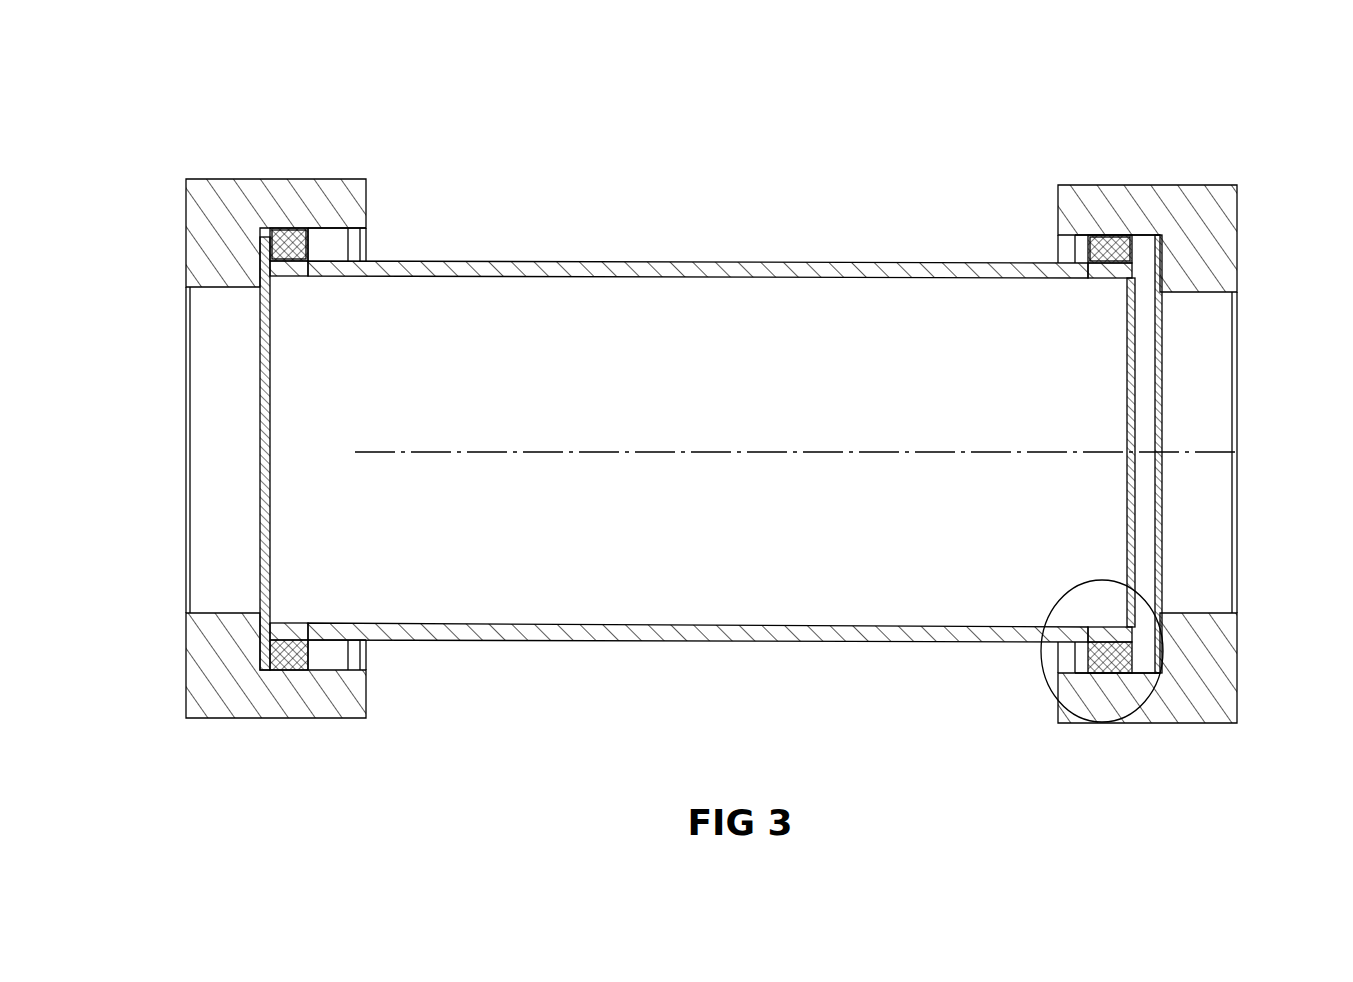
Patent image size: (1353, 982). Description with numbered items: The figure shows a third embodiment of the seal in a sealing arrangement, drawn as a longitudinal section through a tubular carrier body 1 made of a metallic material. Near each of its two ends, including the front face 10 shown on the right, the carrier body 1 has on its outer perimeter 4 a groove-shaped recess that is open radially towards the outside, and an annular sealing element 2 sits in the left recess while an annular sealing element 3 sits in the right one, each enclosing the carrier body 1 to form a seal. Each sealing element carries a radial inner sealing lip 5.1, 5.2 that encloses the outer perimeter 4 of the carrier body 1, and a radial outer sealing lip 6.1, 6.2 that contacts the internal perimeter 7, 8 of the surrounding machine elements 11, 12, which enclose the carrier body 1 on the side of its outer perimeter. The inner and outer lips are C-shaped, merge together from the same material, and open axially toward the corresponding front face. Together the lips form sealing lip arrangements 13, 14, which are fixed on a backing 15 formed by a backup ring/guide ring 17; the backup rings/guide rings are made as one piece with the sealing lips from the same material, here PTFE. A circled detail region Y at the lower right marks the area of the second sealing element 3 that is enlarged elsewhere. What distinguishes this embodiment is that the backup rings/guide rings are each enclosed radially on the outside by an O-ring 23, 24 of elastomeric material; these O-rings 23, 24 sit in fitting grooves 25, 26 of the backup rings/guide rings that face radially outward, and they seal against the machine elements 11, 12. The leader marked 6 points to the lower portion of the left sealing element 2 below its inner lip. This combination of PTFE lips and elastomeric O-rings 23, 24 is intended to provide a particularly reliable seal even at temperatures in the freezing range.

The tubular carrier body 1 is at (758, 265).
The sealing element 2 is at (300, 250).
The sealing element 3 is at (1080, 268).
The outer perimeter 4 is at (1134, 278).
The radial inner sealing lip 5.1 is at (287, 625).
The radial inner sealing lip 5.2 is at (1122, 640).
The support ring 6 is at (292, 268).
The radial outer sealing lip 6.1 is at (290, 668).
The radial outer sealing lip 6.2 is at (1107, 670).
The internal perimeter 7 is at (325, 228).
The internal perimeter 8 is at (1142, 235).
The front face 10 is at (1103, 277).
The machine element 11 is at (215, 210).
The machine element 12 is at (1203, 248).
The sealing lip arrangement 13 is at (268, 240).
The sealing lip arrangement 14 is at (1137, 652).
The backing 15 is at (346, 755).
The backup ring/guide ring 17 is at (312, 672).
The O-ring 23 is at (275, 136).
The O-ring 24 is at (1089, 164).
The fitting groove 25 is at (290, 235).
The fitting groove 26 is at (1100, 240).
The detail region Y is at (1045, 672).